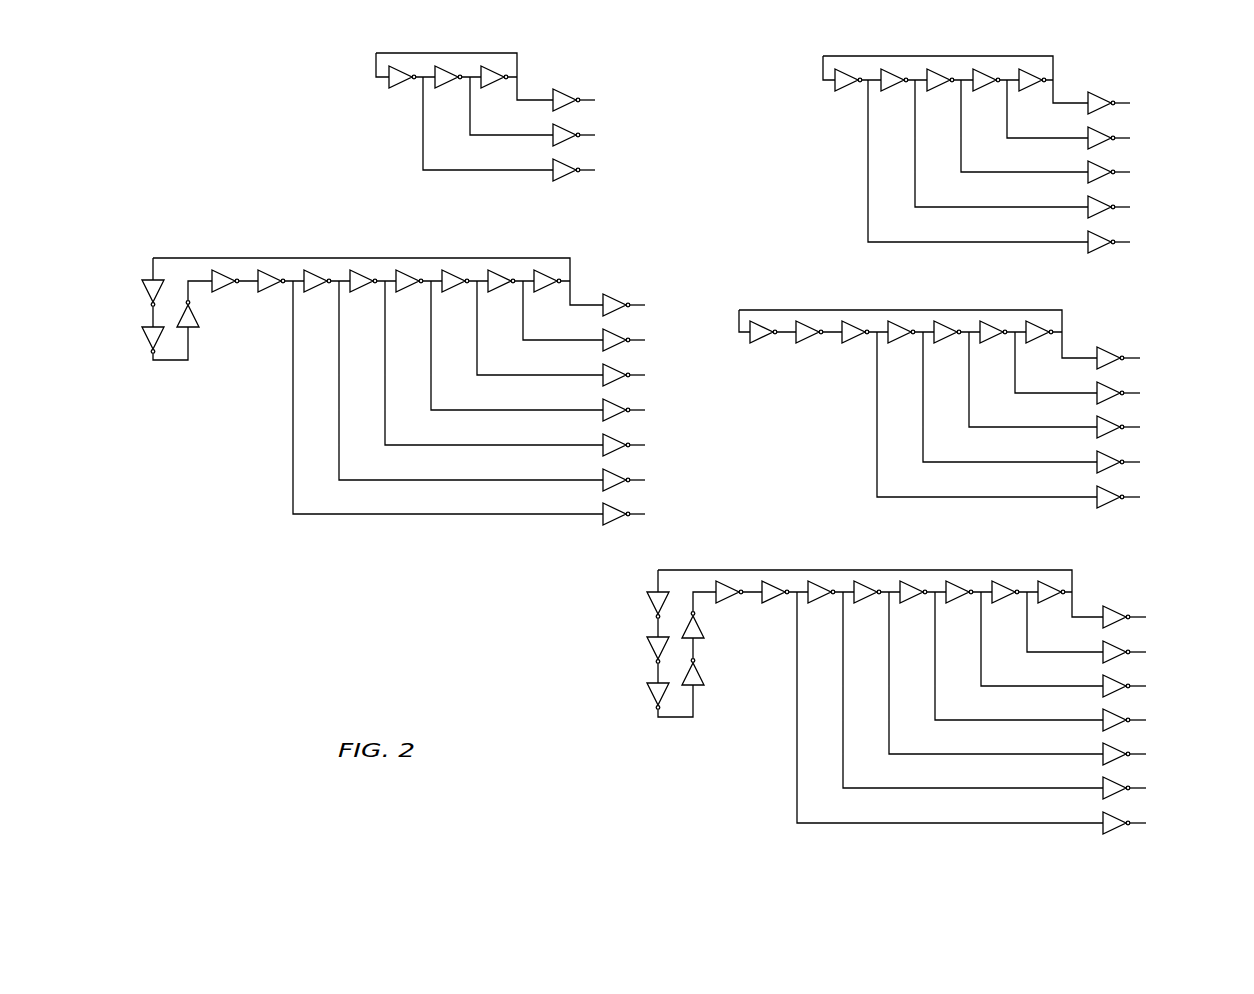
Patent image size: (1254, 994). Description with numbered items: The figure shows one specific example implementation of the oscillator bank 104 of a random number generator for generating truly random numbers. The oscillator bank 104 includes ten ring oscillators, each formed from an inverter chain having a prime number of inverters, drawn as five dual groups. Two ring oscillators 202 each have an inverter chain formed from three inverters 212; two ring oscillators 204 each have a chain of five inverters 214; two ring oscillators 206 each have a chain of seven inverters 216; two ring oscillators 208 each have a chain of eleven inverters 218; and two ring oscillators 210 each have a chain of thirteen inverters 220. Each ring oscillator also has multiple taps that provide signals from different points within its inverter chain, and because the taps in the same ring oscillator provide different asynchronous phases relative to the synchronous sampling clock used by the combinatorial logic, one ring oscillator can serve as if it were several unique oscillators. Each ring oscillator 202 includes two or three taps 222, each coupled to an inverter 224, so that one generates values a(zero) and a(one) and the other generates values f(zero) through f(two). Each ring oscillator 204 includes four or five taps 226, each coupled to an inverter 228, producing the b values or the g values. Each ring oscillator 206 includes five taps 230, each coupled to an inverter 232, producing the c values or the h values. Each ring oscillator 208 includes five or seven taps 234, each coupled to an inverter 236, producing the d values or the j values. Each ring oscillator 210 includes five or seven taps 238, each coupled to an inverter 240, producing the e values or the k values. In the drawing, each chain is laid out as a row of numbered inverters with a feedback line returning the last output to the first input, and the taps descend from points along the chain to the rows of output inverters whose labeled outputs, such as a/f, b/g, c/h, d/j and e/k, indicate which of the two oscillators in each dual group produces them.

The oscillator bank 104 is at (305, 612).
The ring oscillator 202 is at (338, 68).
The ring oscillator 204 is at (798, 74).
The ring oscillator 206 is at (805, 465).
The ring oscillator 208 is at (234, 416).
The ring oscillator 210 is at (722, 718).
The inverter 212 is at (383, 89).
The inverter 214 is at (828, 92).
The inverter 216 is at (793, 351).
The inverter 218 is at (205, 271).
The inverter 220 is at (651, 705).
The tap 222 is at (415, 88).
The inverter 224 is at (559, 184).
The tap 226 is at (861, 90).
The inverter 228 is at (1101, 90).
The tap 230 is at (871, 340).
The inverter 232 is at (1113, 345).
The tap 234 is at (288, 288).
The inverter 236 is at (622, 295).
The tap 238 is at (790, 605).
The inverter 240 is at (1121, 607).